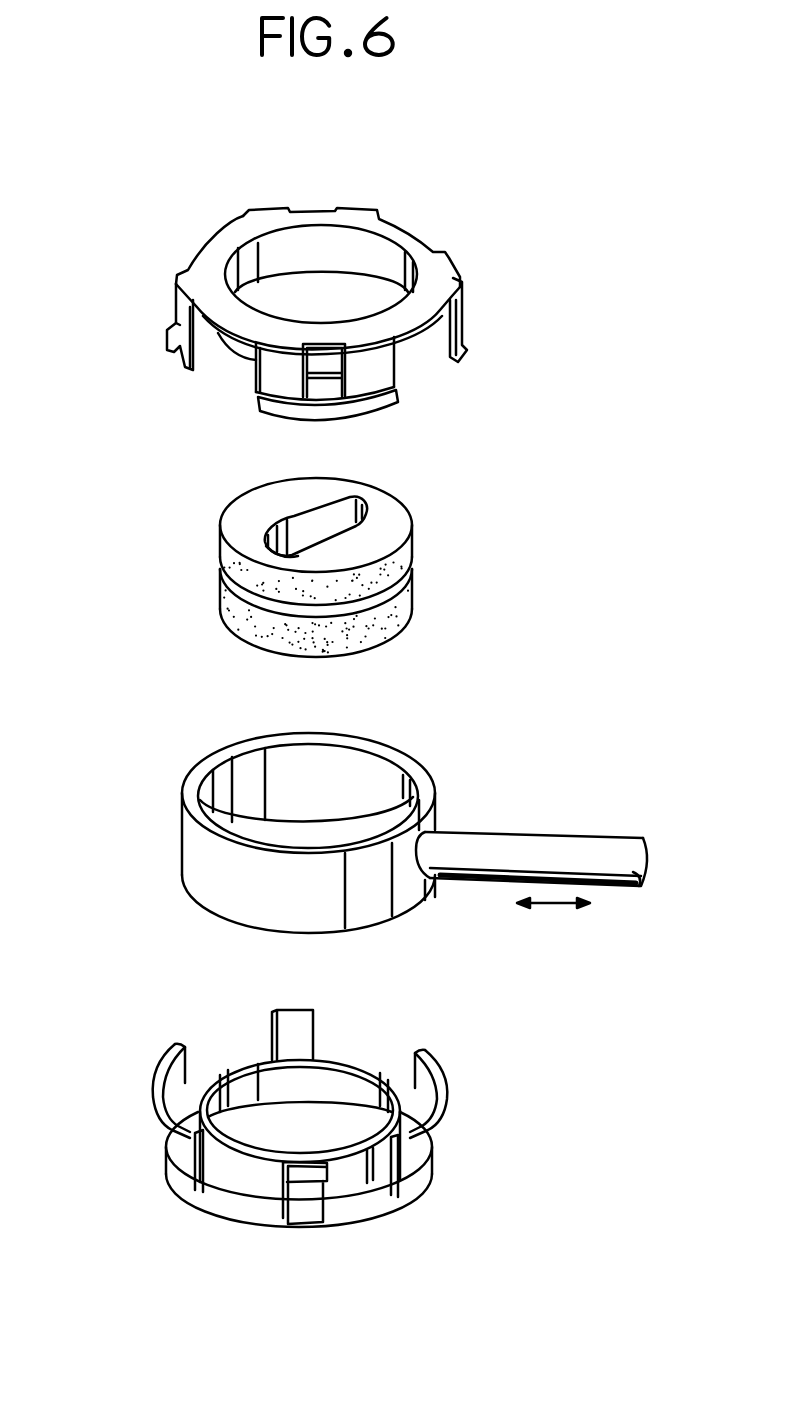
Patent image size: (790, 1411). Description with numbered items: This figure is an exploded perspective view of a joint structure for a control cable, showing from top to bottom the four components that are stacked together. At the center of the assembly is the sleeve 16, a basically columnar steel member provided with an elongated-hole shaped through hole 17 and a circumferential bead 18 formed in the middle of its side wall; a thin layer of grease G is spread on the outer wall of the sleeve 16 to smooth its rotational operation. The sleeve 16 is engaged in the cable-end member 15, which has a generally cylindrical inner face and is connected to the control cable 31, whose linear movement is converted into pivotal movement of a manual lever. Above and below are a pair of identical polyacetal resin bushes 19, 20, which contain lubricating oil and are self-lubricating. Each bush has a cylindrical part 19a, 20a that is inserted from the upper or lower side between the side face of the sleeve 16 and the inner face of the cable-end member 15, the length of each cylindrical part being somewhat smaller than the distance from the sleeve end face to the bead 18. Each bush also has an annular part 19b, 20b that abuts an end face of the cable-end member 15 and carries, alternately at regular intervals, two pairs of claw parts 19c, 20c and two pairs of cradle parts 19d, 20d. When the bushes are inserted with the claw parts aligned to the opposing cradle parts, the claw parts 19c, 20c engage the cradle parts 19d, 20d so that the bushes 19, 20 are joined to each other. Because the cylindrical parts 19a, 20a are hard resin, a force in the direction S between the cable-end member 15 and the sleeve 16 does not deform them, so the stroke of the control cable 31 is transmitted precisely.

The bush 19 is at (350, 298).
The cylindrical part 19a is at (313, 243).
The annular part 19b is at (223, 240).
The claw part 19c is at (165, 378).
The cradle part 19d is at (399, 172).
The sleeve 16 is at (321, 567).
The through hole 17 is at (297, 525).
The circumferential bead 18 is at (413, 570).
The grease G is at (183, 633).
The cable-end member 15 is at (414, 821).
The control cable 31 is at (578, 836).
The direction of force S is at (556, 927).
The bush 20 is at (324, 1129).
The cylindrical part 20a is at (360, 1088).
The annular part 20b is at (368, 1203).
The claw part 20c is at (265, 1272).
The cradle part 20d is at (108, 1067).